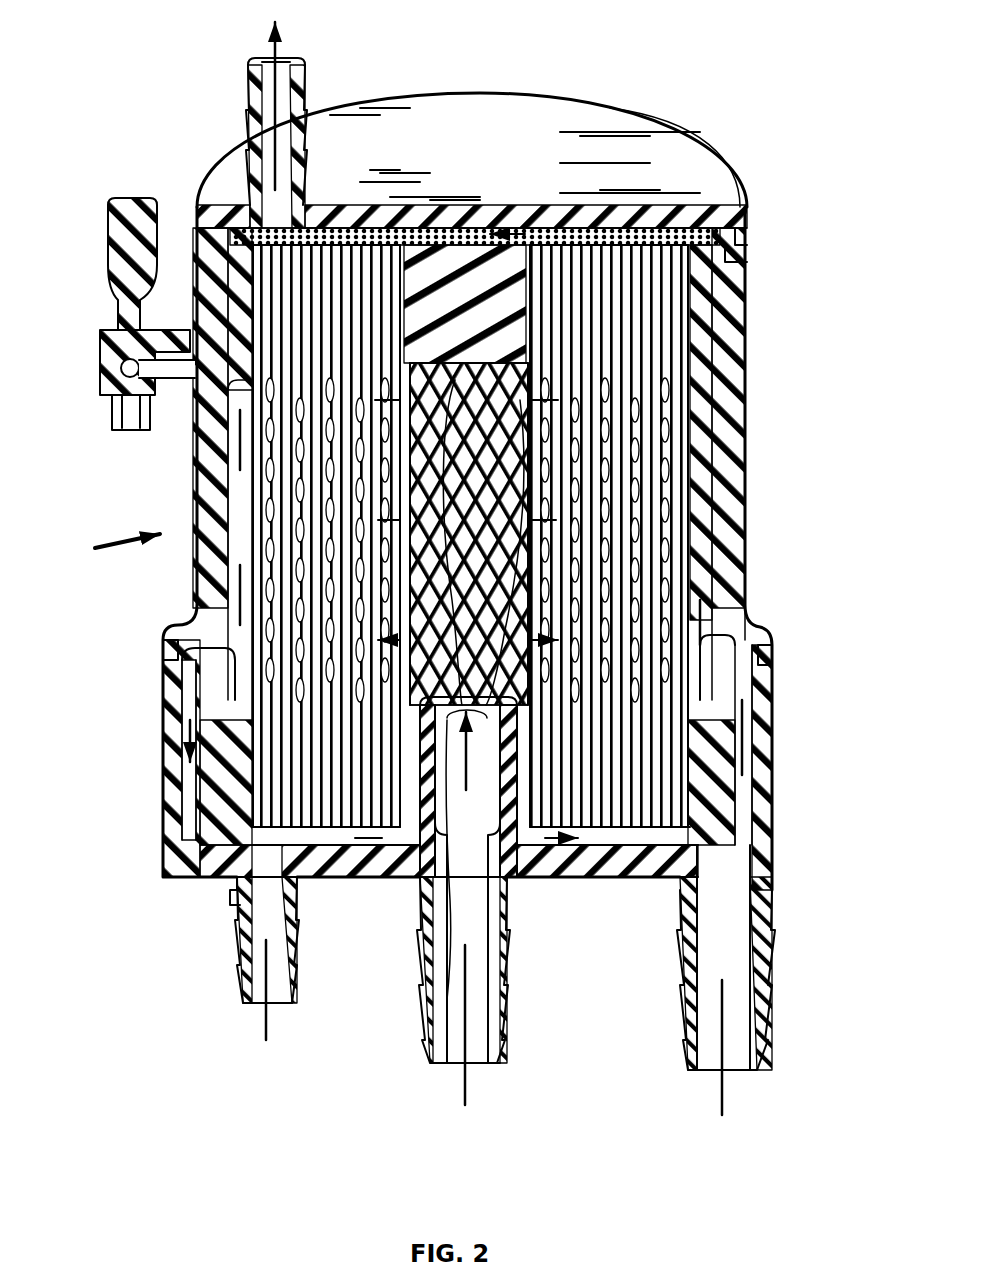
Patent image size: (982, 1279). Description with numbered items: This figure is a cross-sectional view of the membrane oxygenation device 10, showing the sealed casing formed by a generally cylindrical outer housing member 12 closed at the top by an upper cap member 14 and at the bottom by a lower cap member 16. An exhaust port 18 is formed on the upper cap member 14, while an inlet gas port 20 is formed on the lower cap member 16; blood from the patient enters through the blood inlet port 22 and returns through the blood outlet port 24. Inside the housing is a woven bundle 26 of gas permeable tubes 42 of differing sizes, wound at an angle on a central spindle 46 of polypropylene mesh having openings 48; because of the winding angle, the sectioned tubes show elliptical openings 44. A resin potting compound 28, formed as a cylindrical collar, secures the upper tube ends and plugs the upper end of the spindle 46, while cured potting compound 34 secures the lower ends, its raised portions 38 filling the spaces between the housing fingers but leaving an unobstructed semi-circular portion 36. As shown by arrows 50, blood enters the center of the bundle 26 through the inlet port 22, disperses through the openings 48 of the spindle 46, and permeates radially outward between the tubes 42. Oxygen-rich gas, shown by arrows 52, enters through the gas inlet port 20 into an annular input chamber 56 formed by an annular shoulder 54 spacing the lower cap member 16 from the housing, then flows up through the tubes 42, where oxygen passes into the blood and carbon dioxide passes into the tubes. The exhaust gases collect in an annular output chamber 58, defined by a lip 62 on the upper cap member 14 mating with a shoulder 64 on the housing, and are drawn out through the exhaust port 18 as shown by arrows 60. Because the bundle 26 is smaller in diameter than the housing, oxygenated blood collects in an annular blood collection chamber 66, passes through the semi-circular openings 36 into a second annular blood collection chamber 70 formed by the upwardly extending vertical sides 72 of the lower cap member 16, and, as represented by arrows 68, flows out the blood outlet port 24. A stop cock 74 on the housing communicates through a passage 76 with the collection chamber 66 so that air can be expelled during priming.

The membrane oxygenation device 10 is at (95, 548).
The cylindrical outer housing member 12 is at (745, 512).
The upper cap member 14 is at (636, 135).
The lower cap member 16 is at (765, 652).
The exhaust port 18 is at (303, 78).
The inlet gas port 20 is at (252, 1000).
The blood inlet port 22 is at (452, 1045).
The blood outlet port 24 is at (712, 1060).
The bundle 26 is at (235, 505).
The potting compound 28 is at (465, 268).
The potting compound 34 is at (378, 842).
The semi-circular portion 36 is at (740, 712).
The raised portions 38 is at (725, 798).
The gas permeable tubes 42 is at (660, 340).
The elliptical openings 44 is at (655, 390).
The spindle 46 is at (525, 442).
The openings 48 is at (530, 495).
The arrows 50 is at (660, 612).
The arrows 52 is at (240, 905).
The annular shoulder 54 is at (185, 872).
The annular input chamber 56 is at (316, 848).
The annular output chamber 58 is at (424, 238).
The arrows 60 is at (292, 48).
The lip 62 is at (747, 238).
The shoulder 64 is at (745, 265).
The annular blood collection chamber 66 is at (722, 680).
The arrows 68 is at (745, 625).
The second annular blood collection chamber 70 is at (742, 702).
The vertical sides 72 is at (175, 668).
The stop cock 74 is at (133, 198).
The passage 76 is at (190, 360).